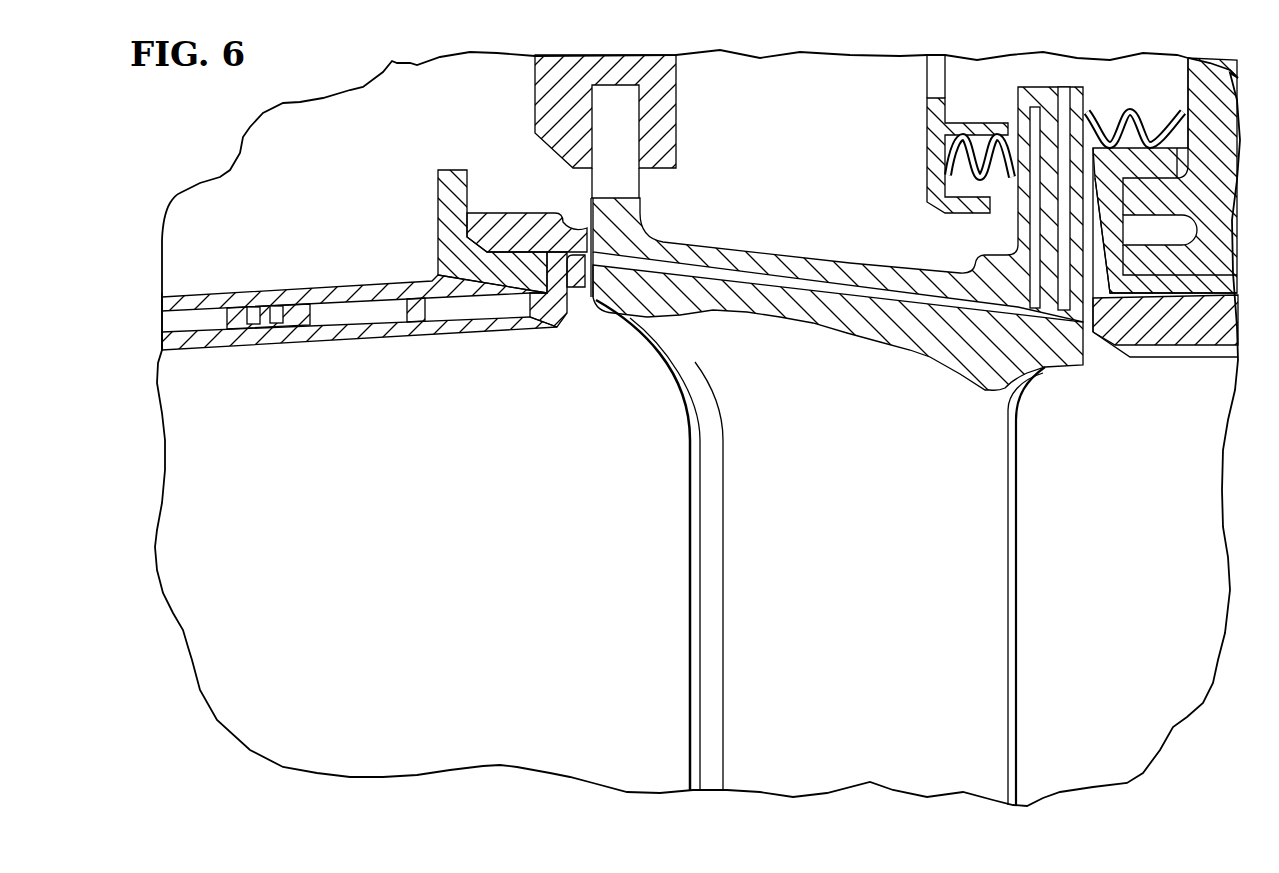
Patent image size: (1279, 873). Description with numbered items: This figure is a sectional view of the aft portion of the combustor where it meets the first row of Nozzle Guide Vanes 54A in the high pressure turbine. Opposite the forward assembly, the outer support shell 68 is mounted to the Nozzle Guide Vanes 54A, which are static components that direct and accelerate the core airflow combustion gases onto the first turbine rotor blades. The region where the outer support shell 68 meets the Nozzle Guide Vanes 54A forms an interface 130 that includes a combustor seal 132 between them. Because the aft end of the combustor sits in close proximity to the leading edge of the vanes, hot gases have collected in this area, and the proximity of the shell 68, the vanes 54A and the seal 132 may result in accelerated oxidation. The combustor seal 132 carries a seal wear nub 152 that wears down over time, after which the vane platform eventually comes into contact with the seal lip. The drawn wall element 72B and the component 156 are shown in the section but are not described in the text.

The first row of Nozzle Guide Vanes 54A is at (874, 560).
The outer support shell 68 is at (343, 296).
The duct wall 72B is at (340, 333).
The interface 130 is at (527, 190).
The combustor seal 132 is at (498, 228).
The seal wear nub 152 is at (594, 232).
The seal land 156 is at (577, 270).